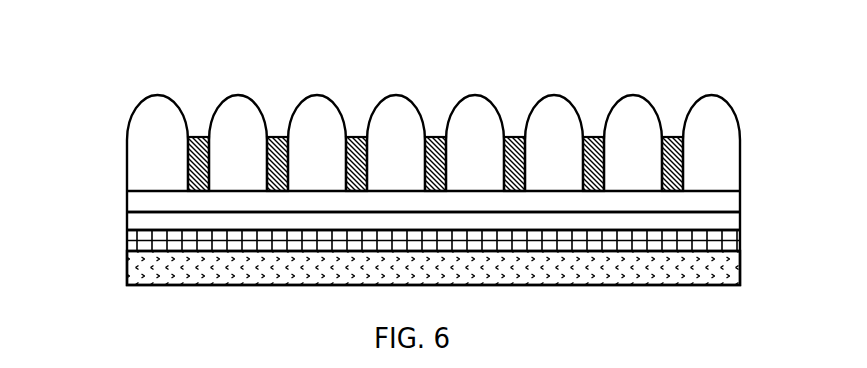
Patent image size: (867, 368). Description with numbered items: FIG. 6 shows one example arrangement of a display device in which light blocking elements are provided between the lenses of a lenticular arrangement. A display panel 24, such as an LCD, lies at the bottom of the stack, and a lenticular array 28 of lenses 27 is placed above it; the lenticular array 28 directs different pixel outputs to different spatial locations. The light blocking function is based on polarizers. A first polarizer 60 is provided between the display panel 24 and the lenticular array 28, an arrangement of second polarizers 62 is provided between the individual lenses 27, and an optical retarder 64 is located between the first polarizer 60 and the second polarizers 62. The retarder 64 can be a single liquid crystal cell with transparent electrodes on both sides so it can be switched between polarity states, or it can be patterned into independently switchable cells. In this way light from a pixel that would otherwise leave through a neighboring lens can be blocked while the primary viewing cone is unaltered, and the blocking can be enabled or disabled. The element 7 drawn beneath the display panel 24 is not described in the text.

The second polarizers 62 is at (267, 136).
The lenses 27 is at (630, 115).
The lenticular array 28 is at (762, 153).
The optical retarder 64 is at (127, 200).
The first polarizer 60 is at (127, 219).
The display panel 24 is at (127, 240).
The substrate 7 is at (127, 272).